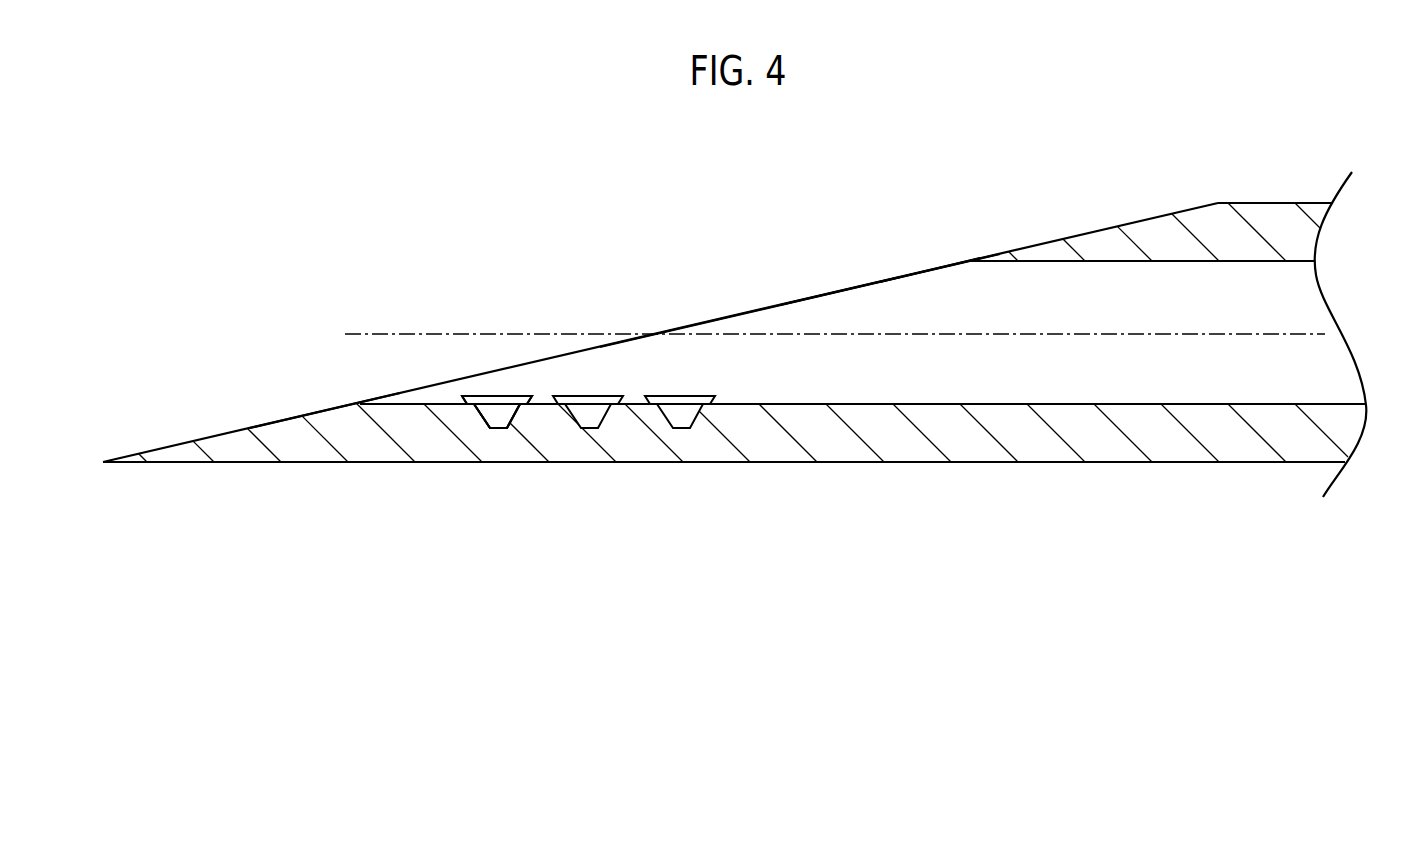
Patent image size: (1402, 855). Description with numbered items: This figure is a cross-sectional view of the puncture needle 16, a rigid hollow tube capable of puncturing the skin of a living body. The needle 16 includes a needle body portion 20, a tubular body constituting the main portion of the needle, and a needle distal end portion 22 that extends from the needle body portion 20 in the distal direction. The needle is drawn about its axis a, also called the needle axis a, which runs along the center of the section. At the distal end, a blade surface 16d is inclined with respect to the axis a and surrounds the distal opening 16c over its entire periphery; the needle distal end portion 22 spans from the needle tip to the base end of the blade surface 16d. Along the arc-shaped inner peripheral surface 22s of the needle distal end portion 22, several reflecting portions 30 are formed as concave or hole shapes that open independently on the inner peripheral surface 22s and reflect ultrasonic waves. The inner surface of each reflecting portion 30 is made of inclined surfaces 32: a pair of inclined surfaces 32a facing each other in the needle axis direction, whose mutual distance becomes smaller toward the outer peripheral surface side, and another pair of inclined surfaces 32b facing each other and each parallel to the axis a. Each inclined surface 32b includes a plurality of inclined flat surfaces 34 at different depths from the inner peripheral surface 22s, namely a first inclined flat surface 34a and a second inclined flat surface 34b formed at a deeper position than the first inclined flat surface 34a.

The puncture needle 16 is at (702, 161).
The distal opening 16c is at (835, 290).
The blade surface 16d is at (317, 412).
The needle body portion 20 is at (1255, 202).
The needle distal end portion 22 is at (755, 308).
The inner peripheral surface 22s is at (930, 295).
The reflecting portion 30 is at (495, 425).
The inclined surface 32 is at (496, 325).
The inclined surface 32a is at (490, 417).
The inclined surface 32b is at (496, 419).
The inclined flat surface 34 is at (454, 440).
The first inclined flat surface 34a is at (473, 399).
The second inclined flat surface 34b is at (507, 425).
The axis a is at (826, 334).